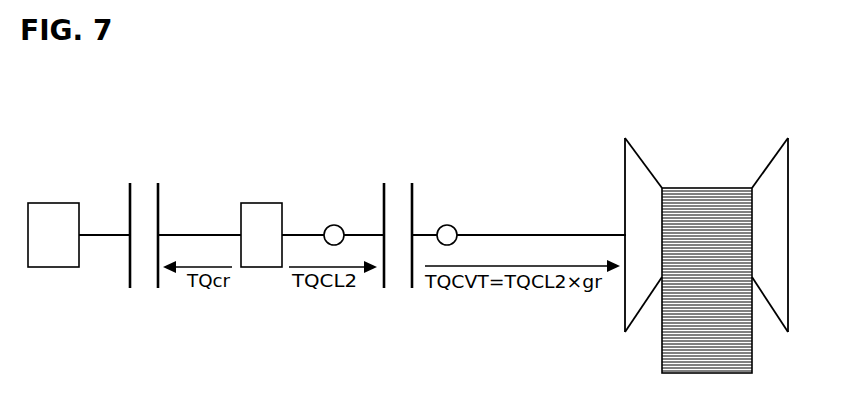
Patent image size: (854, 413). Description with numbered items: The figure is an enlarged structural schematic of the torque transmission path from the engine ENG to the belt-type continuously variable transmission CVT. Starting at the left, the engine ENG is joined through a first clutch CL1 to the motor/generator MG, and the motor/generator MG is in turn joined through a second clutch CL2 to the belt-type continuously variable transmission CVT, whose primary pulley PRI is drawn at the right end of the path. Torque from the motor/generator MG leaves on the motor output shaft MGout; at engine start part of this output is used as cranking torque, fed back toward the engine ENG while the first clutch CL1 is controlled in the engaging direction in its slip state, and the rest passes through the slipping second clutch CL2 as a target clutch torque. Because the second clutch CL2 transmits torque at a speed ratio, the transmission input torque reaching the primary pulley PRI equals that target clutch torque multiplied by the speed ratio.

The engine ENG is at (53, 235).
The first clutch CL1 is at (145, 183).
The motor/generator MG is at (261, 235).
The motor output shaft MGout is at (307, 220).
The second clutch CL2 is at (395, 183).
The belt-type continuously variable transmission CVT is at (707, 227).
The primary pulley PRI is at (779, 151).